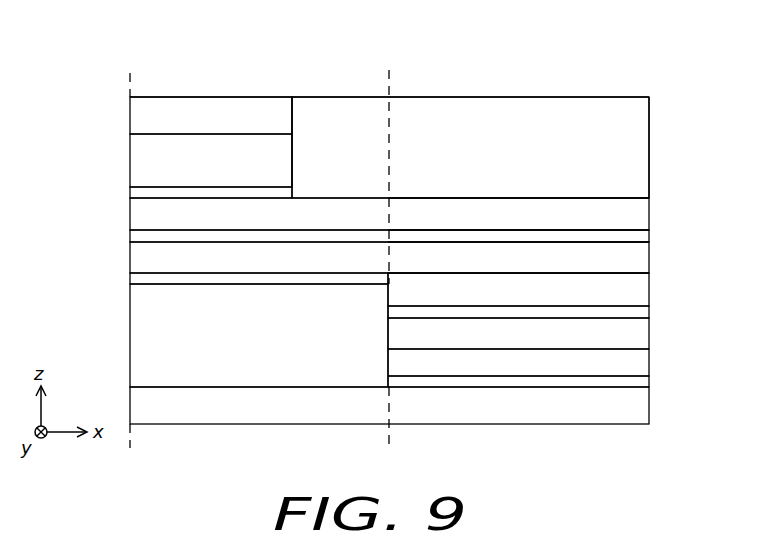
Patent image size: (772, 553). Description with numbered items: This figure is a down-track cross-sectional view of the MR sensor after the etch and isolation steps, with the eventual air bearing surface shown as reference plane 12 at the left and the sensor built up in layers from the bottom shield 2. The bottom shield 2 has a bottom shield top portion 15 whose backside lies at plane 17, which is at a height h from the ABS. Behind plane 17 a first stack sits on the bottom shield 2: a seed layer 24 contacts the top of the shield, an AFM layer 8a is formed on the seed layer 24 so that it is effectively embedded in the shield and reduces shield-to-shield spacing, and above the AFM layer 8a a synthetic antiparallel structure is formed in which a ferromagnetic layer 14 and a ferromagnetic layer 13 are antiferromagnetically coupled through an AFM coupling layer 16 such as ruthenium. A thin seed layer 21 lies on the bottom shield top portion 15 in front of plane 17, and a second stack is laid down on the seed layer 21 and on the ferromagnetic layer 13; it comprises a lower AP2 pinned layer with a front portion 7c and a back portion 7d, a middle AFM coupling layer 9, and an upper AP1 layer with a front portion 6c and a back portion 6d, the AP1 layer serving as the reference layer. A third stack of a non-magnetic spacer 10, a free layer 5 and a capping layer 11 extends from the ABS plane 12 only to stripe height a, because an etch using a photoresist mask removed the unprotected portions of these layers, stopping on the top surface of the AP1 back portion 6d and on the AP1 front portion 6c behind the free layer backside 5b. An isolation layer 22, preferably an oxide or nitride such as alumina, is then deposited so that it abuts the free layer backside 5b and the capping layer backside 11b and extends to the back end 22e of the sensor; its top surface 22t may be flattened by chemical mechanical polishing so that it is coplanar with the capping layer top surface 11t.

The bottom shield 2 is at (632, 408).
The free layer 5 is at (145, 160).
The backside of the free layer 5b is at (293, 168).
The front portion of AP1 layer 6c is at (143, 215).
The back portion of AP1 layer 6d is at (632, 212).
The front portion of AP2 layer 7c is at (142, 257).
The back portion of AP2 layer 7d is at (632, 258).
The AFM layer 8a is at (632, 363).
The AFM coupling layer 9 is at (142, 235).
The non-magnetic spacer 10 is at (144, 193).
The capping layer 11 is at (145, 113).
The capping layer top surface 11t is at (205, 97).
The backside of the capping layer 11b is at (293, 118).
The ABS reference plane 12 is at (129, 264).
The ferromagnetic layer 13 is at (632, 287).
The ferromagnetic layer 14 is at (632, 333).
The bottom shield top portion 15 is at (142, 332).
The AFM coupling layer 16 is at (632, 312).
The plane 17- 17 is at (389, 259).
The seed layer 21 is at (142, 280).
The isolation layer 22 is at (632, 157).
The isolation layer top surface 22t is at (502, 97).
The isolation layer back end 22e is at (650, 118).
The seed layer 24 is at (632, 380).